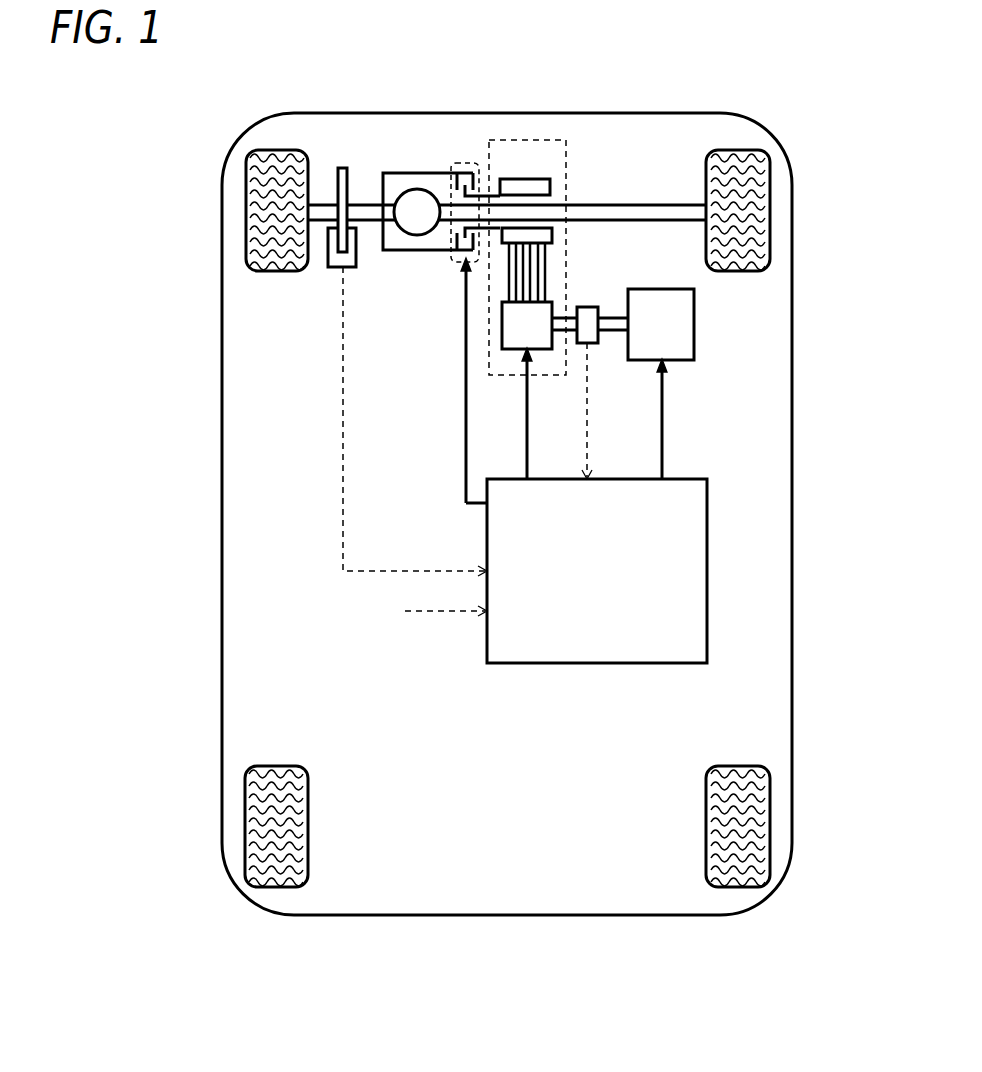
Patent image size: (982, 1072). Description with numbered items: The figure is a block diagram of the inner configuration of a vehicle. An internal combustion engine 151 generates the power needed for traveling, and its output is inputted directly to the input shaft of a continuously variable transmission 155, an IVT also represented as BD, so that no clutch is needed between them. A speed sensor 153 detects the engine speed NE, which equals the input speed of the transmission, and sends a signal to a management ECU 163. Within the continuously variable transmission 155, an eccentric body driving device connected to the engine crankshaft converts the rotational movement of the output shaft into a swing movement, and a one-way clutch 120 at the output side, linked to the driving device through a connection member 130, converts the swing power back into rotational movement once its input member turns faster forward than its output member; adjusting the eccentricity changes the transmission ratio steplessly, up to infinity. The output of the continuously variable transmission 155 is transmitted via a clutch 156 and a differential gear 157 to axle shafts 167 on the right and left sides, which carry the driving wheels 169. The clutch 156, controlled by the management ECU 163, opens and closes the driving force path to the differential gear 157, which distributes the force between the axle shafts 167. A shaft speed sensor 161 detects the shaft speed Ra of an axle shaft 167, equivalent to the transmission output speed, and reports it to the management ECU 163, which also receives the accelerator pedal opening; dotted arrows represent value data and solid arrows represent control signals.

The one-way clutch 120 is at (550, 187).
The connection member 130 is at (547, 272).
The internal combustion engine 151 is at (677, 362).
The speed sensor 153 is at (592, 345).
The continuously variable transmission 155 is at (533, 140).
The clutch 156 is at (472, 162).
The differential gear 157 is at (417, 188).
The shaft speed sensor 161 is at (336, 268).
The management ECU 163 is at (610, 663).
The axle shafts 167 is at (372, 203).
The driving wheels 169 is at (246, 218).